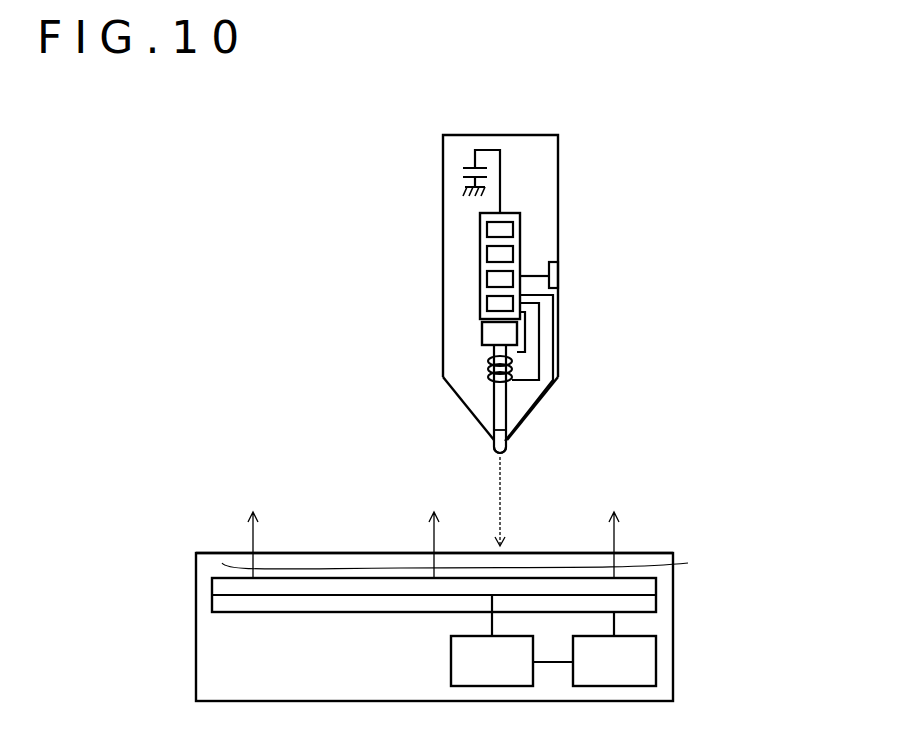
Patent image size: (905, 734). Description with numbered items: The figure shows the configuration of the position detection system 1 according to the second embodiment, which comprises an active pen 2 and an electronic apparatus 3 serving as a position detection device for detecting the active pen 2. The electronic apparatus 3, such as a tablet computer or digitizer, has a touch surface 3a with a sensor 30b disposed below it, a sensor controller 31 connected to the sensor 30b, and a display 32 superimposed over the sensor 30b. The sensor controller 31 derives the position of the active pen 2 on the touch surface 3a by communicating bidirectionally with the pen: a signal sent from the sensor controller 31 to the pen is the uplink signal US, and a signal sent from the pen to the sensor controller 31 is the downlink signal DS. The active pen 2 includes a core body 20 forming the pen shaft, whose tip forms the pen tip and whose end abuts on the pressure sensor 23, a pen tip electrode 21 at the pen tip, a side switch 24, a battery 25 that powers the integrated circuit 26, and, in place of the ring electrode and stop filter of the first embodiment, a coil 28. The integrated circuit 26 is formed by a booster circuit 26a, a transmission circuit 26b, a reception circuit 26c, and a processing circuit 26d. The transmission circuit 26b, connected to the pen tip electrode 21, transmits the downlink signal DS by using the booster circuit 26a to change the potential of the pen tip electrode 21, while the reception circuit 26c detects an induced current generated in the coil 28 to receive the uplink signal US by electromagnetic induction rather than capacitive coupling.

The position detection system 1 is at (238, 344).
The active pen 2 is at (538, 135).
The electronic apparatus 3 is at (675, 631).
The touch surface 3a is at (215, 553).
The core body 20 is at (492, 379).
The pen tip electrode 21 is at (505, 447).
The pressure sensor 23 is at (512, 333).
The side switch 24 is at (558, 275).
The battery 25 is at (470, 166).
The integrated circuit 26 is at (521, 213).
The booster circuit 26a is at (488, 229).
The transmission circuit 26b is at (488, 254).
The reception circuit 26c is at (488, 278).
The processing circuit 26d is at (488, 302).
The coil 28 is at (512, 372).
The sensor 30b is at (212, 587).
The sensor controller 31 is at (477, 673).
The display 32 is at (599, 673).
The downlink signal DS is at (502, 487).
The uplink signal US is at (471, 545).